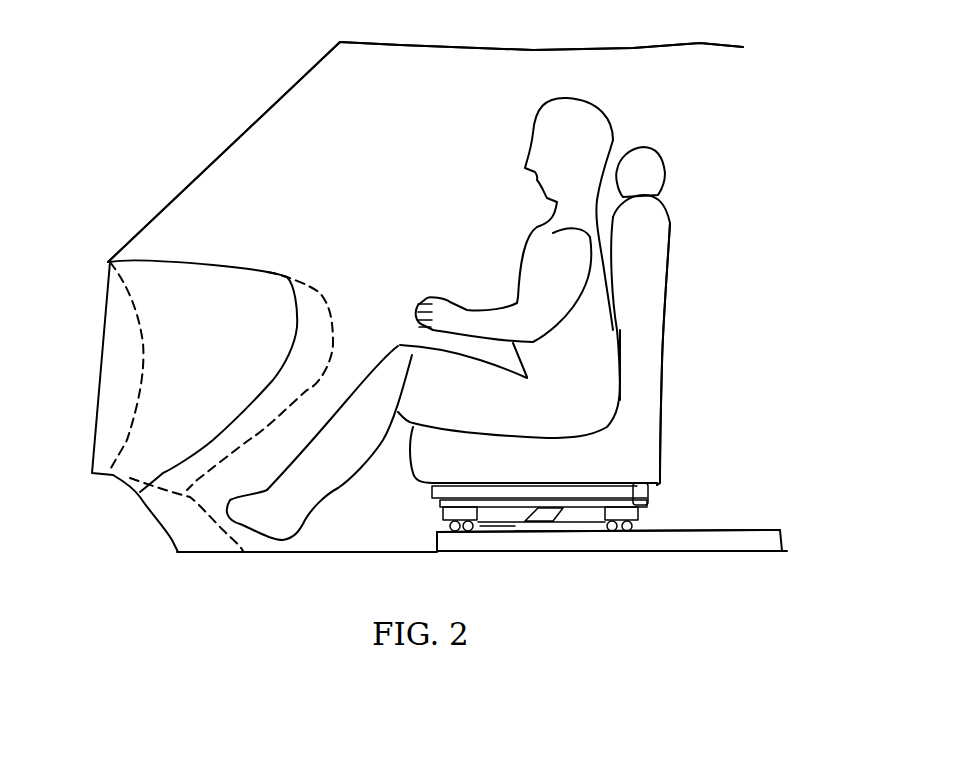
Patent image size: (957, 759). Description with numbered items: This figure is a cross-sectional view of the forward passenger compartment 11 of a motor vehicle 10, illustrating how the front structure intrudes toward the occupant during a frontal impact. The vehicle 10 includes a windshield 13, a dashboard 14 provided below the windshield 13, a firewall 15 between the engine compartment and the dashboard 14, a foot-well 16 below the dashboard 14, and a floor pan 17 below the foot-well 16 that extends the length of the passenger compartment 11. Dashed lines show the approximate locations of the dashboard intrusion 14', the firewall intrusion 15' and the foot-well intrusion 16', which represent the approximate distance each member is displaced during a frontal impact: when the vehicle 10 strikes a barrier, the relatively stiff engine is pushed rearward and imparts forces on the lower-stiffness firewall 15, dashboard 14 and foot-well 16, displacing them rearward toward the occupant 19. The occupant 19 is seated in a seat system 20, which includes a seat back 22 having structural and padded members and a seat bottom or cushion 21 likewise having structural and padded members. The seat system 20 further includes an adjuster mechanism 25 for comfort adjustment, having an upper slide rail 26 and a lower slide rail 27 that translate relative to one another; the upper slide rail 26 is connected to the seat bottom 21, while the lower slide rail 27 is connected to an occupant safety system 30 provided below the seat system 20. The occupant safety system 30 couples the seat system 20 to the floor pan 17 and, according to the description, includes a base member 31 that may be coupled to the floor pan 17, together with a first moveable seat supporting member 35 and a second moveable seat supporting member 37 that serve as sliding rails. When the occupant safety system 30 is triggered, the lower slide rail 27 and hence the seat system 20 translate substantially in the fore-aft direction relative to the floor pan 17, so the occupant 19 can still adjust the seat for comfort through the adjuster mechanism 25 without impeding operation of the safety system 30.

The motor vehicle 10 is at (150, 84).
The passenger compartment 11 is at (322, 95).
The windshield 13 is at (165, 200).
The dashboard 14 is at (203, 362).
The dashboard intrusion 14' is at (284, 373).
The firewall 15 is at (83, 368).
The firewall intrusion 15' is at (147, 366).
The foot-well 16 is at (144, 519).
The foot-well intrusion 16' is at (186, 535).
The floor pan 17 is at (347, 555).
The occupant 19 is at (577, 118).
The seat system 20 is at (688, 364).
The seat bottom 21 is at (420, 463).
The seat back 22 is at (653, 240).
The adjuster mechanism 25 is at (496, 478).
The upper slide rail 26 is at (597, 488).
The lower slide rail 27 is at (647, 495).
The occupant safety system 30 is at (591, 562).
The base member 31 is at (653, 540).
The first moveable seat supporting member 35 is at (443, 512).
The second moveable seat supporting member 37 is at (638, 513).